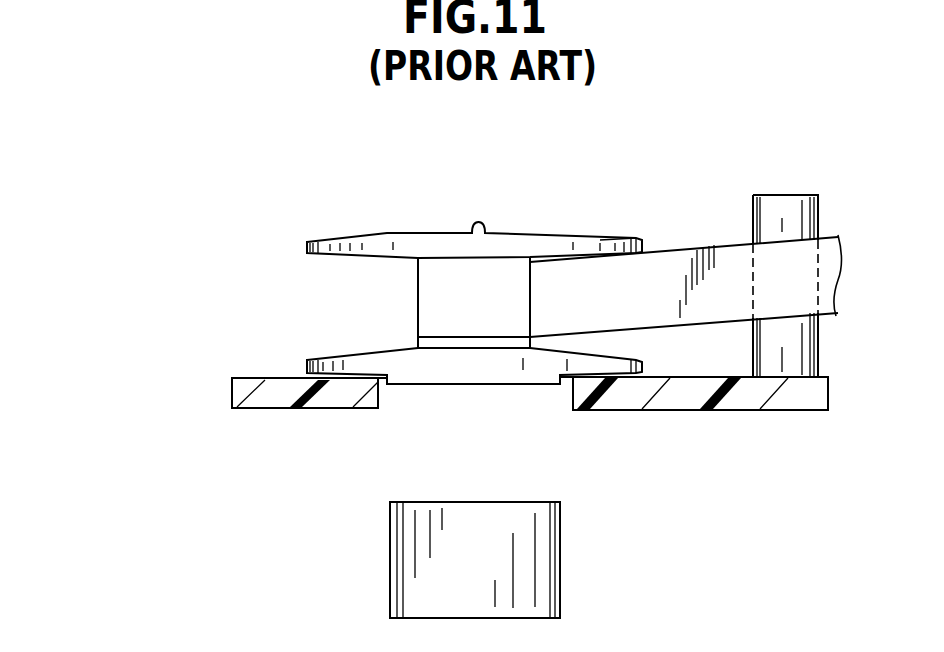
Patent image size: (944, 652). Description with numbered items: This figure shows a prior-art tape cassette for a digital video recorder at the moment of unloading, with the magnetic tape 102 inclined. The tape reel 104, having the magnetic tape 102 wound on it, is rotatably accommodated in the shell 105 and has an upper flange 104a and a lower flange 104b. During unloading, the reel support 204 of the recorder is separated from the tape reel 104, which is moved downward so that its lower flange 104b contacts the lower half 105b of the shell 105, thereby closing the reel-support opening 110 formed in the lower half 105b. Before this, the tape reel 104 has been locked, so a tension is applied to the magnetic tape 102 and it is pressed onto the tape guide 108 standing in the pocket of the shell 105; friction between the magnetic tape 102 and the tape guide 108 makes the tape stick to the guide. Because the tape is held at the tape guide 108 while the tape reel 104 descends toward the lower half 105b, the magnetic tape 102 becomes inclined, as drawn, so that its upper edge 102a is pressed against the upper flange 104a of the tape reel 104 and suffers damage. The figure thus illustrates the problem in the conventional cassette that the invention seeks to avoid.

The magnetic tape 102 is at (563, 275).
The upper edge 102a is at (613, 247).
The tape reel 104 is at (373, 213).
The upper flange 104a is at (330, 238).
The lower flange 104b is at (360, 355).
The shell 105 is at (512, 450).
The lower half 105b is at (320, 410).
The tape guide 108 is at (775, 205).
The reel-support opening 110 is at (380, 395).
The reel support 204 is at (547, 548).